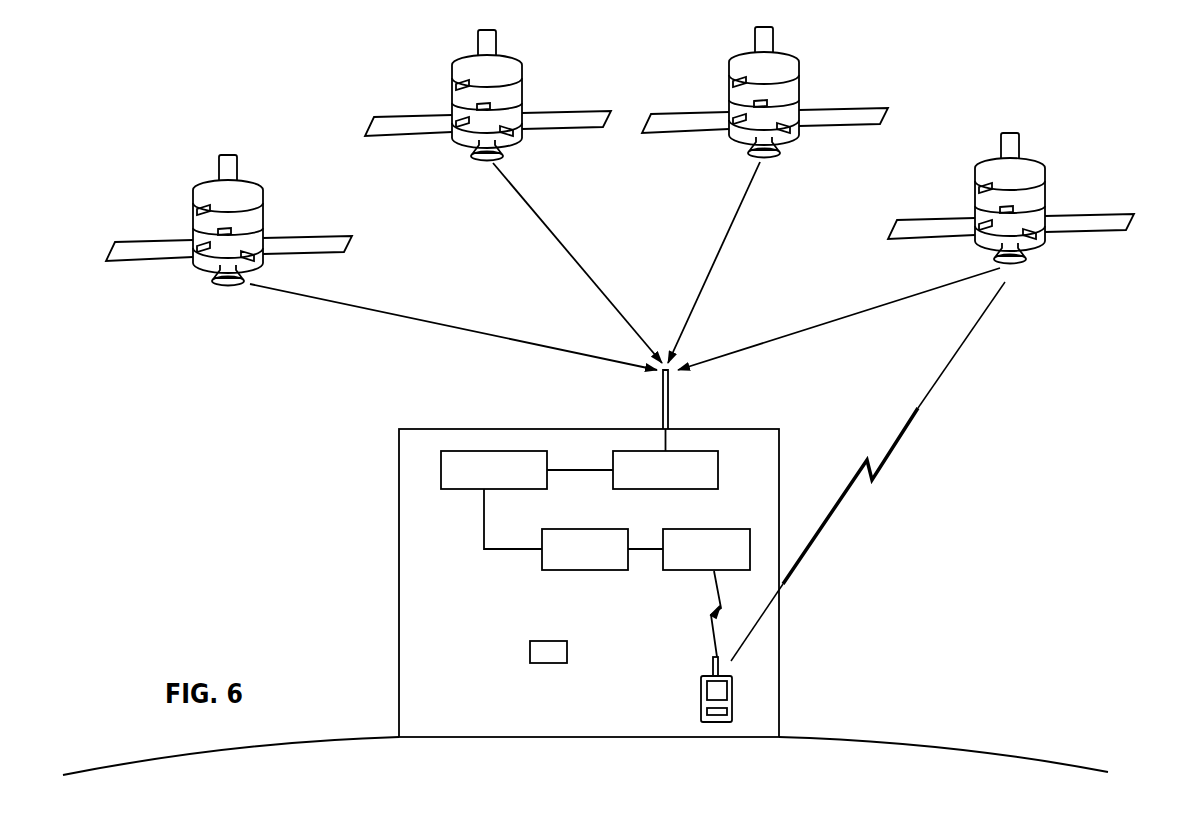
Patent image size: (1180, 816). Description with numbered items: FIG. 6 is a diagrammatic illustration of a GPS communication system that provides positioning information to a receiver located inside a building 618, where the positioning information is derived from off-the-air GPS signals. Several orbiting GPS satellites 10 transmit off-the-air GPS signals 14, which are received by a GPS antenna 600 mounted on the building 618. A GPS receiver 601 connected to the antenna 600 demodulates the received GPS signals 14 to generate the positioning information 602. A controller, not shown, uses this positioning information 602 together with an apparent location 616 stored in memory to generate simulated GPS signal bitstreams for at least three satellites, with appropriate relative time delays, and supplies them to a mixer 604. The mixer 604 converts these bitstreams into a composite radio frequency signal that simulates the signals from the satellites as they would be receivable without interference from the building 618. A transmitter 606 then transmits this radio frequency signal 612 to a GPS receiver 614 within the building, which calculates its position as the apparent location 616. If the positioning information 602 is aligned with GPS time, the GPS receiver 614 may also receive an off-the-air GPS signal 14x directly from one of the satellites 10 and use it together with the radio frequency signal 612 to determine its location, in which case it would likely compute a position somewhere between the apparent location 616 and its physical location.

The orbiting GPS satellite 10 is at (632, 156).
The off-the-air GPS signal 14 is at (477, 332).
The off-the-air GPS signal 14x is at (918, 412).
The GPS antenna 600 is at (671, 404).
The GPS receiver 601 is at (720, 468).
The positioning information 602 is at (463, 490).
The mixer 604 is at (585, 527).
The transmitter 606 is at (727, 527).
The radio frequency signal 612 is at (710, 620).
The GPS receiver 614 is at (700, 697).
The apparent location 616 is at (557, 642).
The building 618 is at (400, 640).